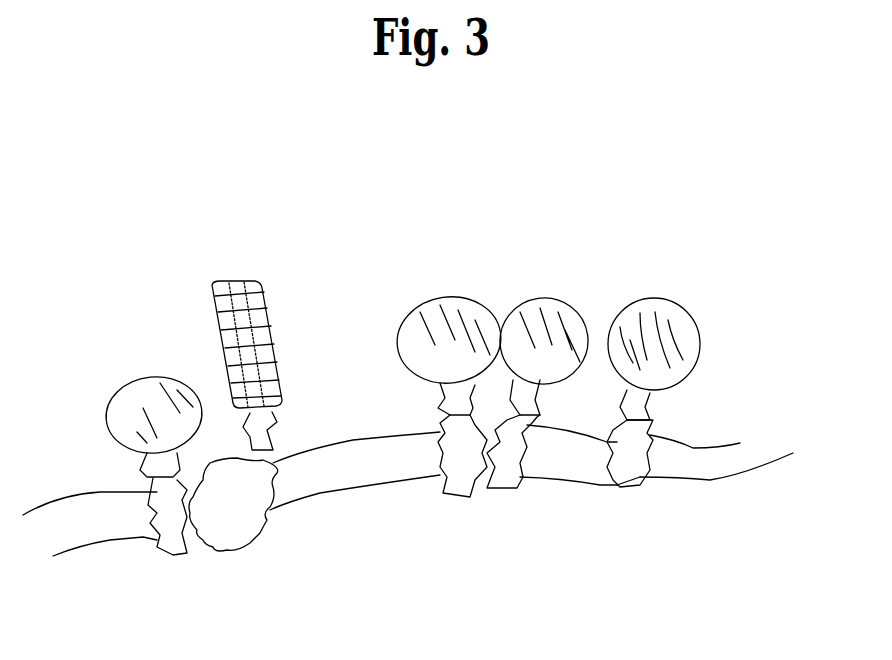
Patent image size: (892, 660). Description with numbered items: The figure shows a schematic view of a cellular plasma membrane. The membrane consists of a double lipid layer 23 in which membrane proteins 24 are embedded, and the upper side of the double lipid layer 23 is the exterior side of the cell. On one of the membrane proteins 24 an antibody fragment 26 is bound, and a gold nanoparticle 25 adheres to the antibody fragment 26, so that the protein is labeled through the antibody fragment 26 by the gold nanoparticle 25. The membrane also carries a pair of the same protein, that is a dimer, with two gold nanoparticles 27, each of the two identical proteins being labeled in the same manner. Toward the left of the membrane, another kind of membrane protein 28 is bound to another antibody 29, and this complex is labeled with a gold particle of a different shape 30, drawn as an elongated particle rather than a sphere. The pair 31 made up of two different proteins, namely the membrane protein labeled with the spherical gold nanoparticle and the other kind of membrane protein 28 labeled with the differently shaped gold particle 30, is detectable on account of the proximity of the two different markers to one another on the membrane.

The double lipid layer 23 is at (757, 460).
The membrane proteins 24 is at (633, 487).
The gold nanoparticle 25 is at (667, 300).
The antibody fragment 26 is at (658, 400).
The pair of the same protein with two gold nanoparticles 27 is at (573, 282).
The another kind of membrane protein 28 is at (240, 533).
The another antibody 29 is at (280, 423).
The gold particle of a different shape 30 is at (262, 290).
The pair made up of two different proteins 31 is at (223, 252).